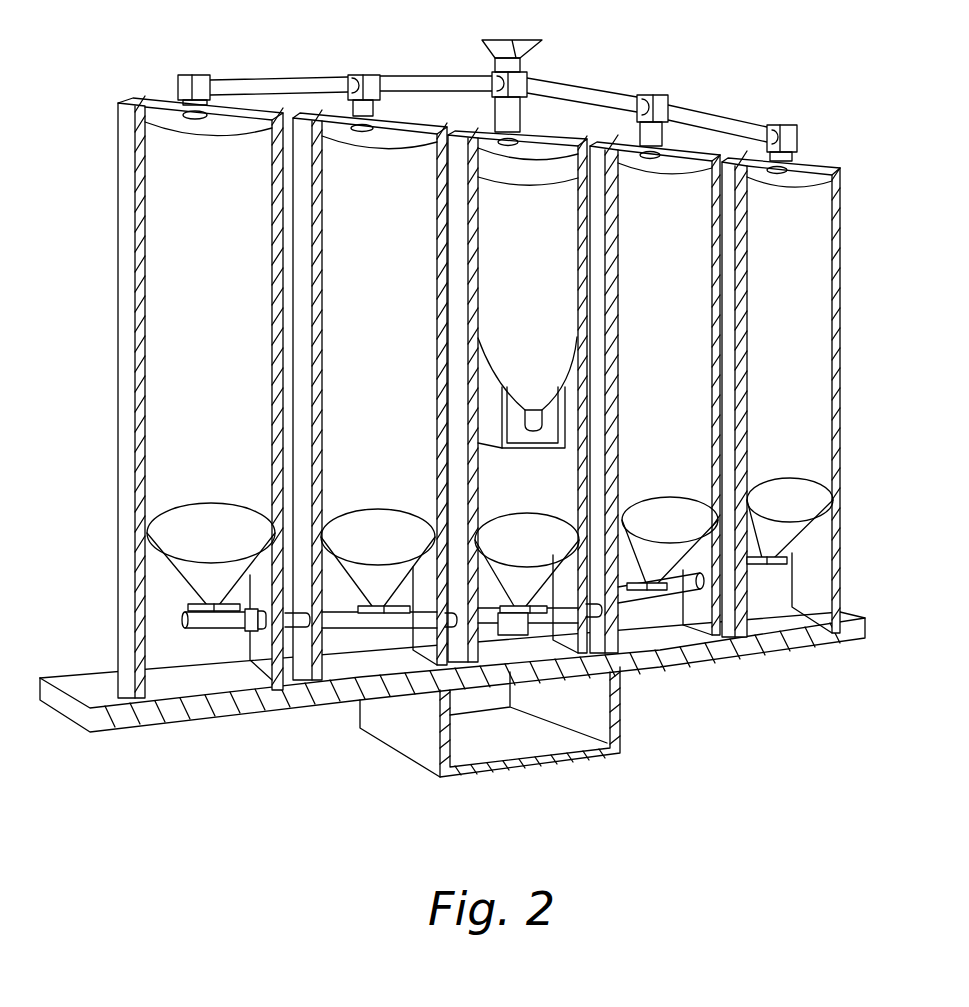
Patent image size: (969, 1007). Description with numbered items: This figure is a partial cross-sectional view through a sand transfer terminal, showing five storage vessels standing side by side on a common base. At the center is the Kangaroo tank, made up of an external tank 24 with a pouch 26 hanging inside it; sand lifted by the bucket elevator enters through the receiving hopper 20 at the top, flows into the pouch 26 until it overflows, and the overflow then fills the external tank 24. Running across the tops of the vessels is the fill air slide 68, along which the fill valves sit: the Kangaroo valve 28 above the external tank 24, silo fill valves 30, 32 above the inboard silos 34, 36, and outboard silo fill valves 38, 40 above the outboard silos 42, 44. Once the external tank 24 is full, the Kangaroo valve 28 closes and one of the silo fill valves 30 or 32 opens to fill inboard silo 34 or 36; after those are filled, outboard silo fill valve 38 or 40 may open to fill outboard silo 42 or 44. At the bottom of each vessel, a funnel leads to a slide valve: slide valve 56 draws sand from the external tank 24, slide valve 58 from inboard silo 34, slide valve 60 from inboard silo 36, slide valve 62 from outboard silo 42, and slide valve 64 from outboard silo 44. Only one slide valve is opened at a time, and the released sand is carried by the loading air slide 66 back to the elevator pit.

The receiving hopper 20 is at (497, 40).
The external tank 24 is at (519, 498).
The pouch 26 is at (519, 296).
The Kangaroo valve 28 is at (522, 68).
The silo fill valve 30 is at (355, 75).
The silo fill valve 32 is at (666, 96).
The inboard silo 34 is at (368, 360).
The inboard silo 36 is at (650, 355).
The outboard silo fill valve 38 is at (188, 75).
The outboard silo fill valve 40 is at (792, 127).
The outboard silo 42 is at (207, 360).
The outboard silo 44 is at (767, 348).
The slide valve 56 is at (518, 605).
The slide valve 58 is at (368, 608).
The slide valve 60 is at (645, 583).
The slide valve 62 is at (200, 605).
The slide valve 64 is at (775, 565).
The loading air slide 66 is at (232, 630).
The fill air slide 68 is at (280, 80).